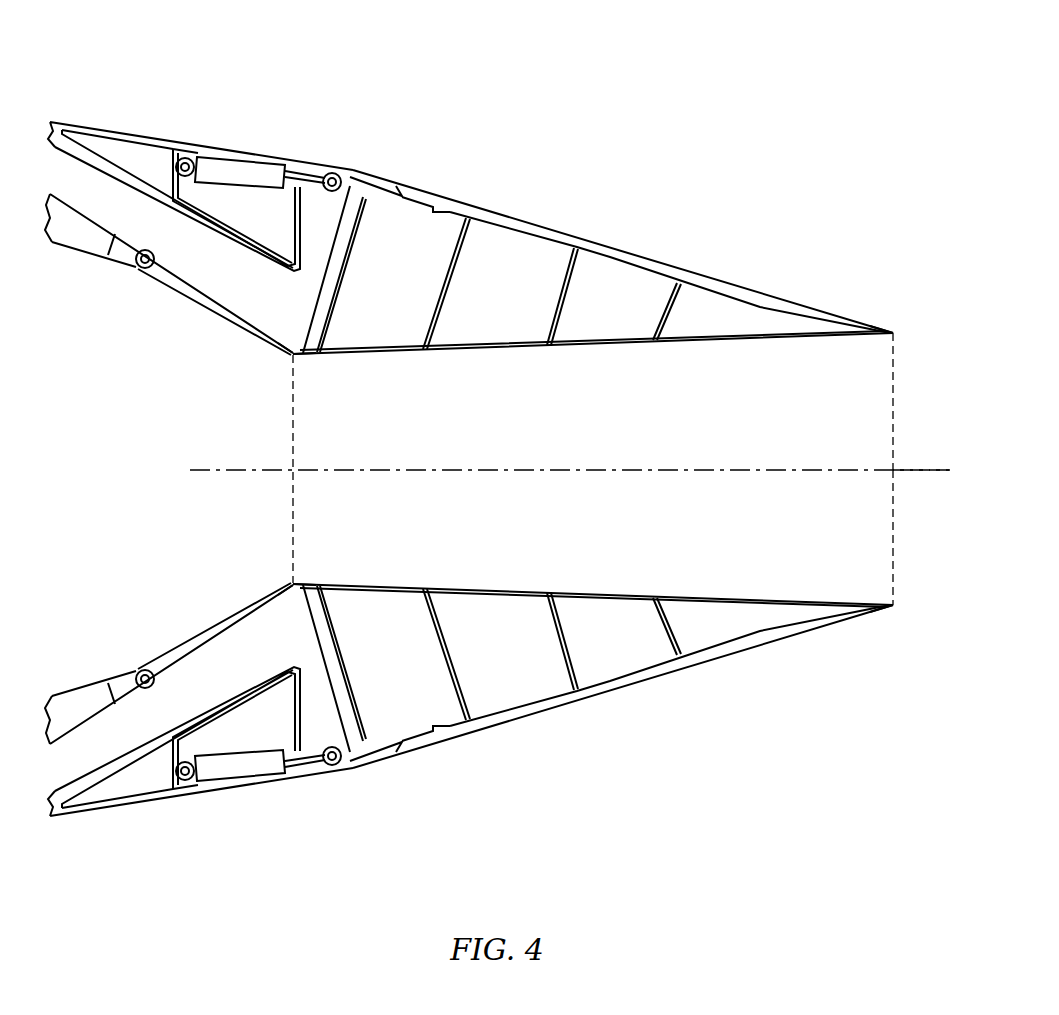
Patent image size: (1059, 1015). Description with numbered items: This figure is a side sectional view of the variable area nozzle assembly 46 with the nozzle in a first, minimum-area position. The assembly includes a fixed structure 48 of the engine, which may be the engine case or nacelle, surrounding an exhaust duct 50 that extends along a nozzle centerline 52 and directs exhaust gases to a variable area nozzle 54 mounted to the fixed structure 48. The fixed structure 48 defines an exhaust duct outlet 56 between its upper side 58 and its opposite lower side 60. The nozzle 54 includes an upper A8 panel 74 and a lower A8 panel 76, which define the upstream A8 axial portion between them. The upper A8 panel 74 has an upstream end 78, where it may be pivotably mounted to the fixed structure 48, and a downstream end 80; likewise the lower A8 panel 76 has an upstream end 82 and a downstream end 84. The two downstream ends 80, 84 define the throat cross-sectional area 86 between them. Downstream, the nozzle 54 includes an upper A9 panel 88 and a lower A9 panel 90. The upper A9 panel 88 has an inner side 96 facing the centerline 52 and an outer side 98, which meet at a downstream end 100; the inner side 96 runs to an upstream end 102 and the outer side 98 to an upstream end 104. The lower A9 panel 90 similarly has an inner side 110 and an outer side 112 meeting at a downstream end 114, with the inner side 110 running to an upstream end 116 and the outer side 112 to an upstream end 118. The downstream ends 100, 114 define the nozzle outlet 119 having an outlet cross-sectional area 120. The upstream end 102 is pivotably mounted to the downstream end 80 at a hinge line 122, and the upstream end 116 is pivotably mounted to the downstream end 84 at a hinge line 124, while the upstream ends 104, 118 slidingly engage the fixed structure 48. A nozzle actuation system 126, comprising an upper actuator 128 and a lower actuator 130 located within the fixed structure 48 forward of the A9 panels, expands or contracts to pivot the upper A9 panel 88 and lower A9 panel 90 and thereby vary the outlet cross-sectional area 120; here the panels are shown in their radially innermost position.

The variable area nozzle assembly 46 is at (777, 91).
The fixed structure 48 is at (96, 95).
The exhaust duct 50 is at (162, 457).
The nozzle centerline 52 is at (940, 480).
The variable area nozzle 54 is at (608, 157).
The exhaust duct outlet 56 is at (116, 277).
The upper side 58 is at (130, 133).
The lower side 60 is at (128, 812).
The upper A8 panel 74 is at (230, 328).
The lower A8 panel 76 is at (198, 632).
The upstream end 78 is at (141, 284).
The downstream end 80 is at (282, 370).
The upstream end 82 is at (139, 665).
The downstream end 84 is at (282, 576).
The throat cross-sectional area 86 is at (300, 518).
The upper A9 panel 88 is at (649, 244).
The lower A9 panel 90 is at (580, 715).
The inner side 96 is at (375, 358).
The outer side 98 is at (518, 220).
The downstream end 100 is at (902, 323).
The upstream end 102 is at (304, 369).
The upstream end 104 is at (361, 159).
The inner side 110 is at (600, 590).
The outer side 112 is at (688, 670).
The downstream end 114 is at (900, 617).
The upstream end 116 is at (308, 579).
The upstream end 118 is at (383, 776).
The nozzle outlet 119 is at (914, 418).
The outlet cross-sectional area 120 is at (888, 520).
The hinge line 122 is at (300, 330).
The hinge line 124 is at (299, 603).
The nozzle actuation system 126 is at (246, 140).
The upper actuator 128 is at (218, 158).
The lower actuator 130 is at (215, 780).